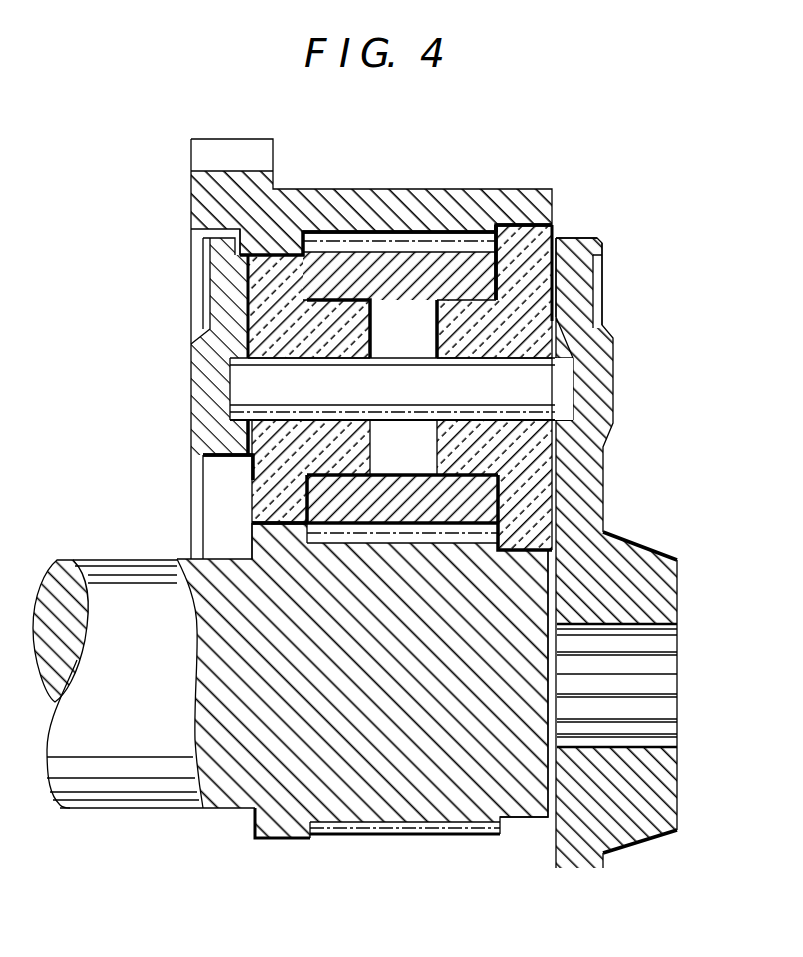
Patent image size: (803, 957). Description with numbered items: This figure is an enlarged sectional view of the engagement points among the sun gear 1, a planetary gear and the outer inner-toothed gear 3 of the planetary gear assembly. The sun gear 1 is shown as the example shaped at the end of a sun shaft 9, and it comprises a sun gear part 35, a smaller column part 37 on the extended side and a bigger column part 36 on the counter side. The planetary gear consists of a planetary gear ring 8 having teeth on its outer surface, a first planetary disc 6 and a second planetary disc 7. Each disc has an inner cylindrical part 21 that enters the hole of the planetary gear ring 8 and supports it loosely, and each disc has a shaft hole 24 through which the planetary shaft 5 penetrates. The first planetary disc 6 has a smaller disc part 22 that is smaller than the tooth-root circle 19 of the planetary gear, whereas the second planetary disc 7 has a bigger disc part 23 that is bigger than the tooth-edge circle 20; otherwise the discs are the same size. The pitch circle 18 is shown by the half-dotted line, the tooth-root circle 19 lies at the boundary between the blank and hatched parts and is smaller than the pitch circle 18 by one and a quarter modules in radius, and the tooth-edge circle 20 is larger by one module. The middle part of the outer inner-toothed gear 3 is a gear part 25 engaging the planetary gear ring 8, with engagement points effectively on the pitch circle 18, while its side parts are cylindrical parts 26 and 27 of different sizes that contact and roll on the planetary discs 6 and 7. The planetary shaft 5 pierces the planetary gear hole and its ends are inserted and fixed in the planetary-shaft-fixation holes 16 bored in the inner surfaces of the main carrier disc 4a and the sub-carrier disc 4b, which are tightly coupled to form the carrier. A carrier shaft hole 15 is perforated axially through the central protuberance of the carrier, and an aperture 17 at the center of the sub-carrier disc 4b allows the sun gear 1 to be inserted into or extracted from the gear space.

The sun gear 1 is at (530, 888).
The outer inner-toothed gear 3 is at (305, 141).
The main carrier disc 4a is at (595, 428).
The sub-carrier disc 4b is at (213, 335).
The planetary shaft 5 is at (240, 390).
The first planetary disc 6 is at (228, 303).
The second planetary disc 7 is at (580, 305).
The planetary gear ring 8 is at (414, 292).
The sun shaft 9 is at (128, 722).
The carrier shaft hole 15 is at (633, 680).
The planetary-shaft-fixation hole 16 is at (215, 372).
The aperture 17 is at (252, 466).
The pitch circle 18 is at (505, 232).
The tooth-root circle 19 is at (257, 479).
The tooth-edge circle 20 is at (347, 533).
The inner cylindrical part 21 is at (333, 323).
The smaller disc part 22 is at (277, 280).
The bigger disc part 23 is at (597, 262).
The shaft hole 24 is at (376, 424).
The gear part 25 is at (398, 200).
The cylindrical part 26 is at (275, 247).
The cylindrical part 27 is at (525, 222).
The sun gear part 35 is at (525, 515).
The bigger column part 36 is at (273, 540).
The smaller column part 37 is at (560, 560).